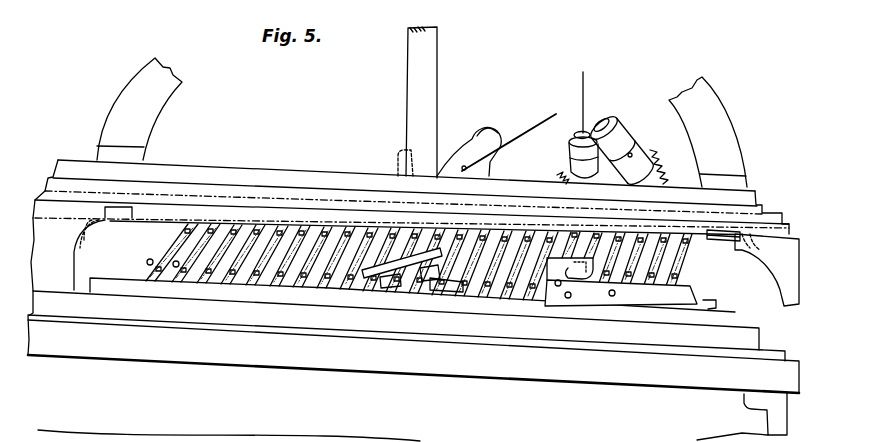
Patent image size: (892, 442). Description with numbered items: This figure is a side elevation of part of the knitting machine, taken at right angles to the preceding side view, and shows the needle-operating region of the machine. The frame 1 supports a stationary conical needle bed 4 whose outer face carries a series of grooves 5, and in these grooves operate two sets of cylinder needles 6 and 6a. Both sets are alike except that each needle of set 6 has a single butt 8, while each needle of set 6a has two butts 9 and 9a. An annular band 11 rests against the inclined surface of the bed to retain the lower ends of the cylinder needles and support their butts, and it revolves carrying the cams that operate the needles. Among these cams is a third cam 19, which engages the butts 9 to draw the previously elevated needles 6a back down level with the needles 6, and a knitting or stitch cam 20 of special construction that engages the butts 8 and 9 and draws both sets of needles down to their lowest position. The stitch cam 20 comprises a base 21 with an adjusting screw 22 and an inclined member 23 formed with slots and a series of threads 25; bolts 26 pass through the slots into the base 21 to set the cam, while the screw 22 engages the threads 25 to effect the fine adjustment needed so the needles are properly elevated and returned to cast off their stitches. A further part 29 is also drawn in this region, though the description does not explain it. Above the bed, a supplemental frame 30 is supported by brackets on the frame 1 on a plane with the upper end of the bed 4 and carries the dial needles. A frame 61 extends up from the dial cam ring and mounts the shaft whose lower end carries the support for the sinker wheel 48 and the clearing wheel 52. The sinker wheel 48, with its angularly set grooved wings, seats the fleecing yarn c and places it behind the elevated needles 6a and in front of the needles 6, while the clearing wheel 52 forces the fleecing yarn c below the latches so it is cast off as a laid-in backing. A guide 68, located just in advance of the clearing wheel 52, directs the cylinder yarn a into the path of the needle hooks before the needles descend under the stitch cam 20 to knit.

The frame 1 is at (412, 417).
The conical needle bed 4 is at (272, 200).
The grooves 5 is at (232, 187).
The needles 6 is at (411, 197).
The needles 6a is at (412, 212).
The single butt 8 is at (233, 286).
The butts 9 is at (255, 286).
The butts 9a is at (243, 286).
The annular band 11 is at (718, 306).
The third cam 19 is at (592, 307).
The knitting or stitch cam 20 is at (437, 295).
The base 21 is at (384, 293).
The adjusting screw 22 is at (413, 292).
The inclined member 23 is at (412, 214).
The threads 25 is at (449, 218).
The bolts 26 is at (413, 354).
The tilted bar 29 is at (358, 297).
The supplemental frame 30 is at (143, 197).
The sinker wheel 48 is at (565, 178).
The clearing wheel 52 is at (628, 149).
The frame 61 is at (708, 132).
The guide 68 is at (457, 150).
The cylinder yarn a is at (509, 135).
The fleecing yarn c is at (594, 98).